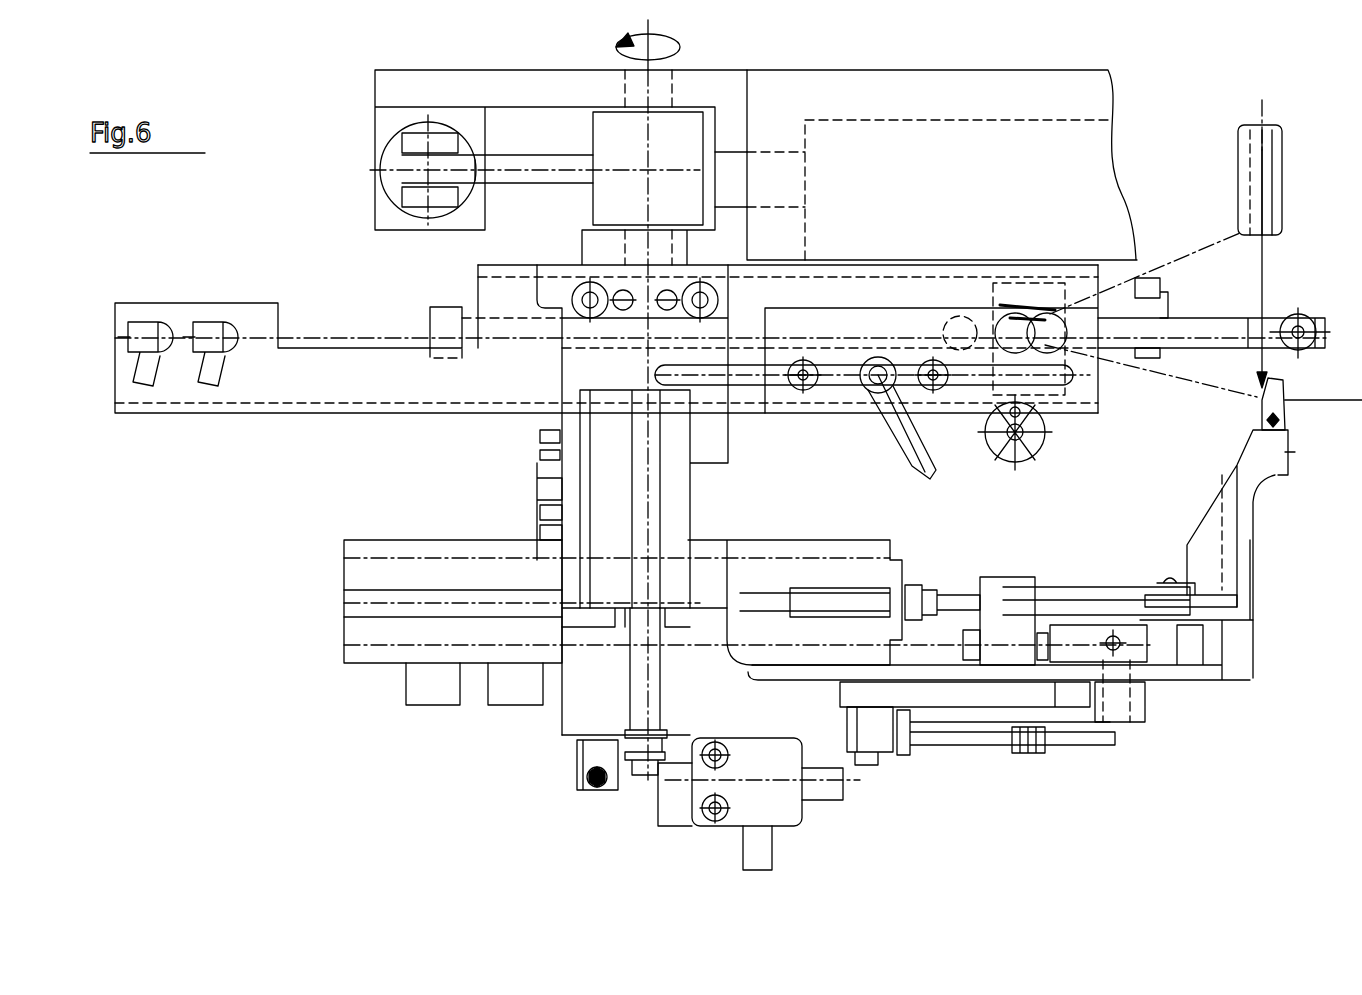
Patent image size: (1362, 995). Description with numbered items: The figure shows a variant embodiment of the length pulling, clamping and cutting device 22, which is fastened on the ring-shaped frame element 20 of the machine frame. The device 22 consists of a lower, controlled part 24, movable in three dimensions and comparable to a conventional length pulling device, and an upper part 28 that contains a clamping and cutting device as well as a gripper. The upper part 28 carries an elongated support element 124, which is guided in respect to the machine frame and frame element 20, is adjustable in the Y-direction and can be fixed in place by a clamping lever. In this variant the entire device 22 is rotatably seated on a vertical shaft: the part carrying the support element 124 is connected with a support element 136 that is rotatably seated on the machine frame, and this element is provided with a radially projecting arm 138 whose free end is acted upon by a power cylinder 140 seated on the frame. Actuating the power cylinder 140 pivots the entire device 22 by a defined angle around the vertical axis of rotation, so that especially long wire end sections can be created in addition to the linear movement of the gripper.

The ring-shaped frame element 20 is at (1098, 100).
The length pulling, clamping and cutting device 22 is at (275, 413).
The lower controlled part 24 is at (1168, 682).
The upper part 28 is at (825, 413).
The elongated support element 124 is at (348, 388).
The support element 136 is at (618, 180).
The radially projecting arm 138 is at (560, 163).
The power cylinder 140 is at (400, 178).